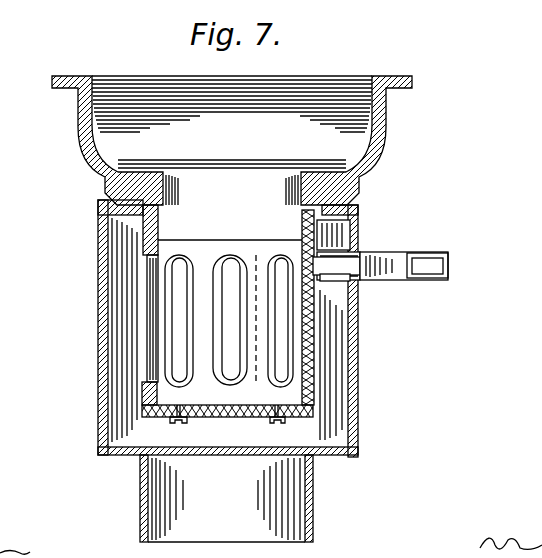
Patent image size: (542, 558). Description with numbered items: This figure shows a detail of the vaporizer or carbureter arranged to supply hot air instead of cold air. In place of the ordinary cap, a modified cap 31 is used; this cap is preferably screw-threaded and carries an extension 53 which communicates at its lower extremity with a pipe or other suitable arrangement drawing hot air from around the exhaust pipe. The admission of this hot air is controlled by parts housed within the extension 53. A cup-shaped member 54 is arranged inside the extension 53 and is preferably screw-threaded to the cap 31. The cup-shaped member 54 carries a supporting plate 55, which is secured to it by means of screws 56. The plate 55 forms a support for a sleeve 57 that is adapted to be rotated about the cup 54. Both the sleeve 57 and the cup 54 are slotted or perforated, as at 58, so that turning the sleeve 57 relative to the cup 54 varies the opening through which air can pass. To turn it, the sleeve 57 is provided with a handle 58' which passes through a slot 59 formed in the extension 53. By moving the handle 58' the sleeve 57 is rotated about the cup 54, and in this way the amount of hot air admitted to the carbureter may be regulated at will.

The modified cap 31 is at (372, 131).
The extension 53 is at (358, 407).
The cup-shaped member 54 is at (312, 347).
The supporting plate 55 is at (312, 417).
The screws 56 is at (285, 424).
The sleeve 57 is at (360, 278).
The slots 58 is at (163, 313).
The handle 58' is at (406, 251).
The slot in extension 59 is at (360, 250).